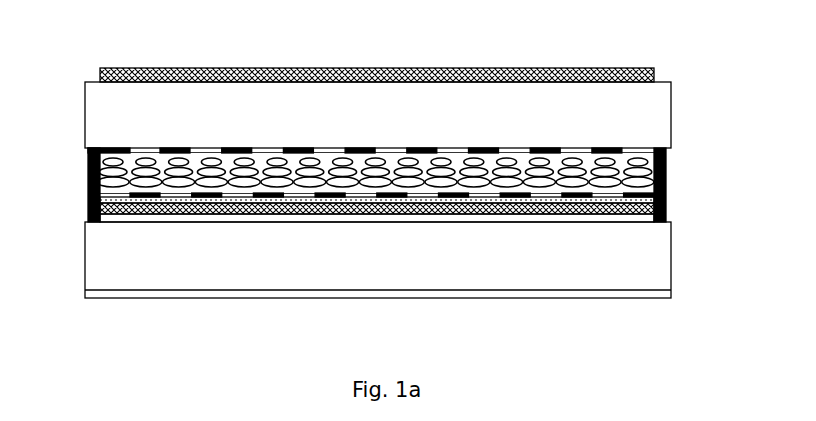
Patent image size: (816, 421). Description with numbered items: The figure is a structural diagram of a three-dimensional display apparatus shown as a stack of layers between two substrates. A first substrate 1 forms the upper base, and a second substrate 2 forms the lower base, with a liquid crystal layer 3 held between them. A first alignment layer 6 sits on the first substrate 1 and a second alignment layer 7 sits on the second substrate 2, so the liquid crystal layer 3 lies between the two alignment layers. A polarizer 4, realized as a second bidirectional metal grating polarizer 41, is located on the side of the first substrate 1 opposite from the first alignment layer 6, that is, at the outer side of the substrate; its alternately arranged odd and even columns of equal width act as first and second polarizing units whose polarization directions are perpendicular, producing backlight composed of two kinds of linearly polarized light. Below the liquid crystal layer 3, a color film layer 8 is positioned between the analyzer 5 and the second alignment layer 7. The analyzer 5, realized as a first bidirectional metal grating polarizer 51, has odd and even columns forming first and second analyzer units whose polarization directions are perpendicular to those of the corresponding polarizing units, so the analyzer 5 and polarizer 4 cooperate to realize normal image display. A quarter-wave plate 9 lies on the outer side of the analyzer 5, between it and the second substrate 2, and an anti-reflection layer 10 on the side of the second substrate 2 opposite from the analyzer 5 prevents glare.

The first substrate 1 is at (652, 125).
The second substrate 2 is at (645, 277).
The liquid crystal layer 3 is at (665, 153).
The polarizer 4 is at (431, 55).
The second bidirectional metal grating polarizer 41 is at (653, 73).
The analyzer 5 is at (340, 210).
The first bidirectional metal grating polarizer 51 is at (90, 210).
The first alignment layer 6 is at (146, 150).
The second alignment layer 7 is at (97, 188).
The color film layer 8 is at (666, 199).
The quarter-wave plate 9 is at (636, 222).
The anti-reflection layer 10 is at (108, 292).